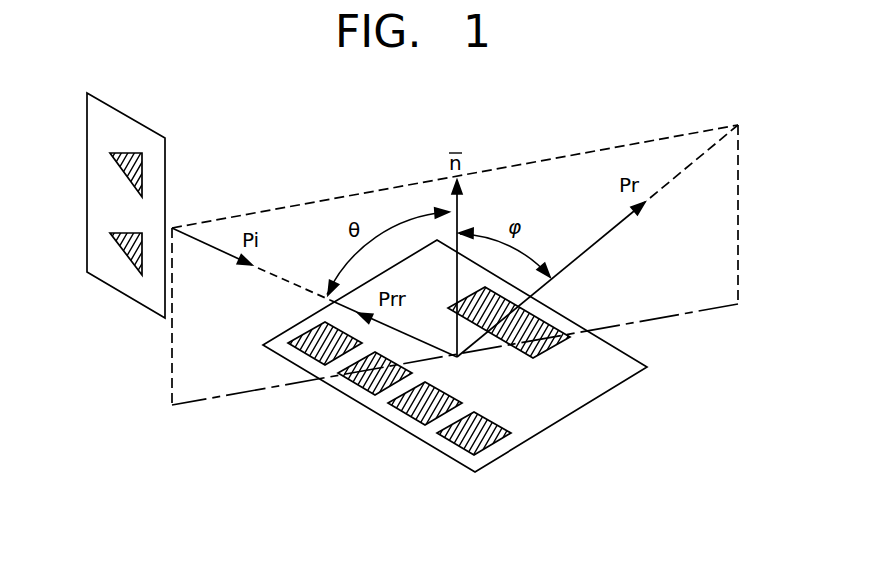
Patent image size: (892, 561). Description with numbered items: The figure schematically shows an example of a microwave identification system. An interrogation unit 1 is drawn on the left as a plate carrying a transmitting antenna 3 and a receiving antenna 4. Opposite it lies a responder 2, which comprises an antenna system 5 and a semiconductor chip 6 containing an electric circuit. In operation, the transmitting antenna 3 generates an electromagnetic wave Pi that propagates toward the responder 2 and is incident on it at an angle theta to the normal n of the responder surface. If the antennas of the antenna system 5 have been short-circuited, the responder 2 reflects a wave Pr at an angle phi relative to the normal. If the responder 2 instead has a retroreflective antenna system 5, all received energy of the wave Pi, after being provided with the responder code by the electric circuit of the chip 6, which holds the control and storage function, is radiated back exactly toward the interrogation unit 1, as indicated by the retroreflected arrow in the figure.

The interrogation unit 1 is at (127, 115).
The responder 2 is at (418, 263).
The transmitting antenna 3 is at (120, 254).
The receiving antenna 4 is at (120, 168).
The antenna system 5 is at (368, 378).
The semiconductor chip 6 is at (520, 333).